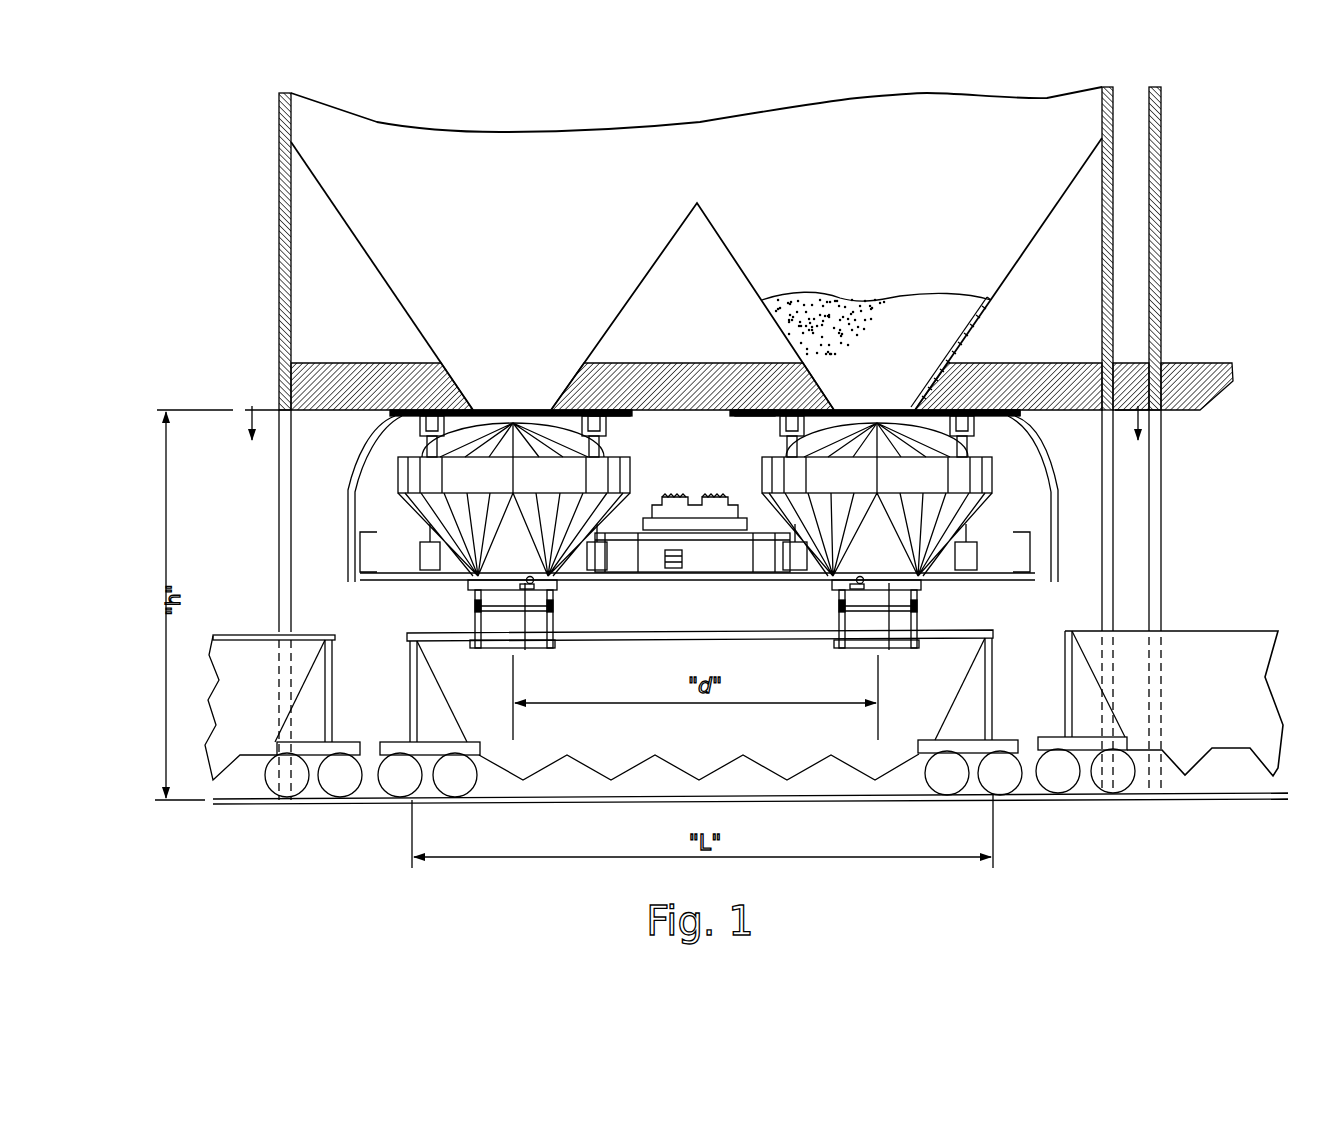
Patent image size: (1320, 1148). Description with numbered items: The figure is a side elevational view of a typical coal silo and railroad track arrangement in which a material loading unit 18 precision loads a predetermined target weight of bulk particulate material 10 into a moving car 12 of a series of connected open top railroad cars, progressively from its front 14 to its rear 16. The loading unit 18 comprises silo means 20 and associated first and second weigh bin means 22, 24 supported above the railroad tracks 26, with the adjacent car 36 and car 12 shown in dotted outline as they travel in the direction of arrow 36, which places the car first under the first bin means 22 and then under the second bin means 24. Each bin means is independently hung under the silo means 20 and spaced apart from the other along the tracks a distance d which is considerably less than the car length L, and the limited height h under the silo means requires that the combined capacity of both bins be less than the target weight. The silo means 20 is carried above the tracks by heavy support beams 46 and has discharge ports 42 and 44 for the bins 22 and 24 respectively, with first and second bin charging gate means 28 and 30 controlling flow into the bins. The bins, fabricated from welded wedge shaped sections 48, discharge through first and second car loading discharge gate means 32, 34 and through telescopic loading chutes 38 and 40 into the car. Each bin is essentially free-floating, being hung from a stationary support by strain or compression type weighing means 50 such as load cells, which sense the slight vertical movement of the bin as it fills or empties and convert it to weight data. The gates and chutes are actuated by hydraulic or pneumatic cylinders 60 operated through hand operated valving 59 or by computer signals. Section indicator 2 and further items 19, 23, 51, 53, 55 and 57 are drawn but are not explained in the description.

The section line of FIG. 2 is at (702, 423).
The bulk particulate material 10 is at (805, 290).
The moving car 12 is at (995, 706).
The front of car 14 is at (410, 695).
The rear of car 16 is at (940, 705).
The material loading unit 18 is at (388, 510).
The hanger 19 is at (957, 408).
The silo means 20 is at (665, 178).
The first weigh bin means 22 is at (1030, 470).
The bracket 23 is at (1113, 550).
The second weigh bin means 24 is at (425, 530).
The railroad tracks 26 is at (622, 797).
The first bin charging gate means 28 is at (850, 410).
The second bin charging gate means 30 is at (508, 408).
The first car loading discharge gate means 32 is at (858, 578).
The second car loading discharge gate means 34 is at (528, 578).
The direction arrow 36 is at (180, 706).
The telescopic loading chute 38 is at (930, 598).
The telescopic loading chute 40 is at (472, 596).
The discharge port 42 is at (917, 398).
The discharge port 44 is at (473, 408).
The heavy support beams 46 is at (660, 363).
The wedge shaped sections 48 is at (523, 445).
The weighing means 50 is at (413, 445).
The load cell 51 is at (420, 562).
The control unit 53 is at (682, 558).
The gate actuator rod 55 is at (525, 650).
The hanger bracket 57 is at (990, 432).
The hand operated valving 59 is at (677, 497).
The hydraulic or pneumatic cylinders 60 is at (413, 434).